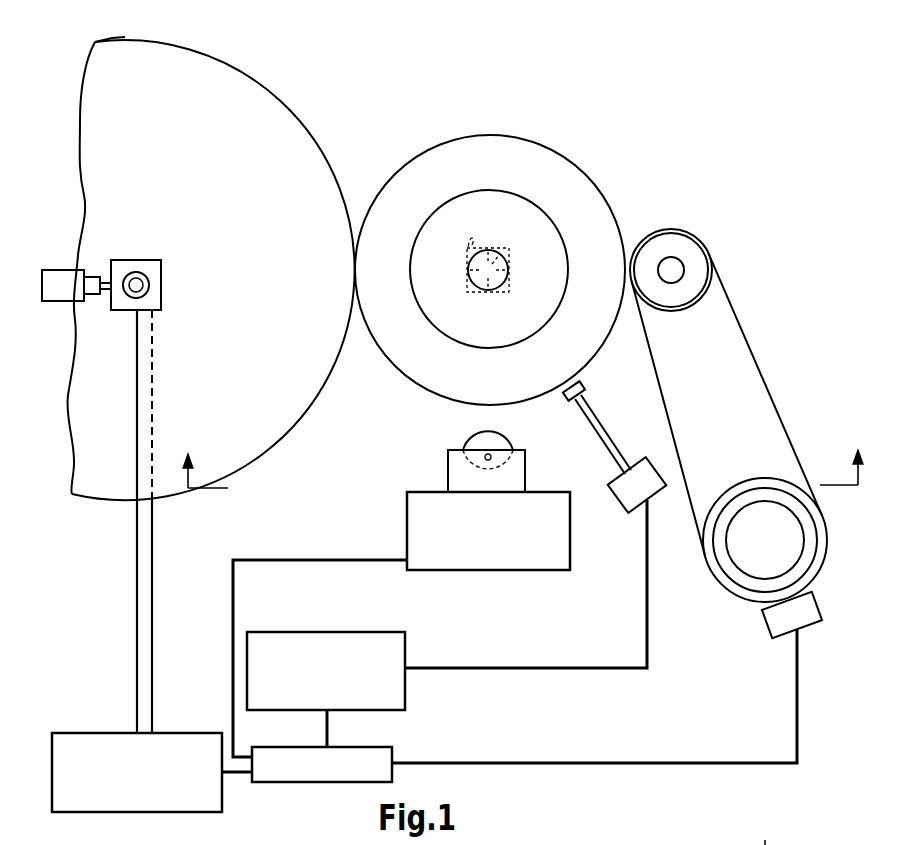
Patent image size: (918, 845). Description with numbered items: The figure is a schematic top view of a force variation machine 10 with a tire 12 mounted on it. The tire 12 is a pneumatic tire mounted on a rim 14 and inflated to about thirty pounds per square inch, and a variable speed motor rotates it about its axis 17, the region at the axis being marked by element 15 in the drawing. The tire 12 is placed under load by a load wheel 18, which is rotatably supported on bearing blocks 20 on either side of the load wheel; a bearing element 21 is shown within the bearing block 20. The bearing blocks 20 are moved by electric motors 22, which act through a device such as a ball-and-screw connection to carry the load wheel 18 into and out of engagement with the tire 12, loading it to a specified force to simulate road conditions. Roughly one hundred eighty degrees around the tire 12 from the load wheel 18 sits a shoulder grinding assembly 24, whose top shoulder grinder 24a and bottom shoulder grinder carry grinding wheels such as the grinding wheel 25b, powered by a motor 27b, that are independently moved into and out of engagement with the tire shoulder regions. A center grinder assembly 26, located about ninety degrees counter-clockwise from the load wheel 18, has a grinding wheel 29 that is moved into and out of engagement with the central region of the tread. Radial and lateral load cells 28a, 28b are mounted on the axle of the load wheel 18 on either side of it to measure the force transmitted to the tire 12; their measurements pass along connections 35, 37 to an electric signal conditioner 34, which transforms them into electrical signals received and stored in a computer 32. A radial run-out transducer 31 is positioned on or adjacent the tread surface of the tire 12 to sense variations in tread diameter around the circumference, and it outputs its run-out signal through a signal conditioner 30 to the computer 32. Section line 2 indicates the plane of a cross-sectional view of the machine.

The force variation machine 10 is at (481, 68).
The tire 12 is at (541, 140).
The rim 14 is at (547, 210).
The sensing element 15 is at (472, 245).
The axis 17 is at (512, 252).
The load wheel 18 is at (243, 62).
The bearing blocks 20 is at (125, 263).
The bearing 21 is at (135, 283).
The electric motors 22 is at (50, 280).
The shoulder grinding assembly 24 is at (761, 356).
The top shoulder grinder 24a is at (764, 831).
The grinding wheel 25b is at (700, 248).
The center grinder assembly 26 is at (404, 505).
The motor 27b is at (780, 540).
The load cell 28a is at (146, 260).
The load cell 28b is at (162, 270).
The grinding wheel 29 is at (469, 442).
The signal conditioner 30 is at (406, 644).
The radial run-out transducer 31 is at (618, 503).
The computer 32 is at (391, 747).
The electric signal conditioner 34 is at (108, 733).
The tube 35 is at (137, 563).
The conduit 37 is at (152, 612).
The section line 2 is at (523, 456).